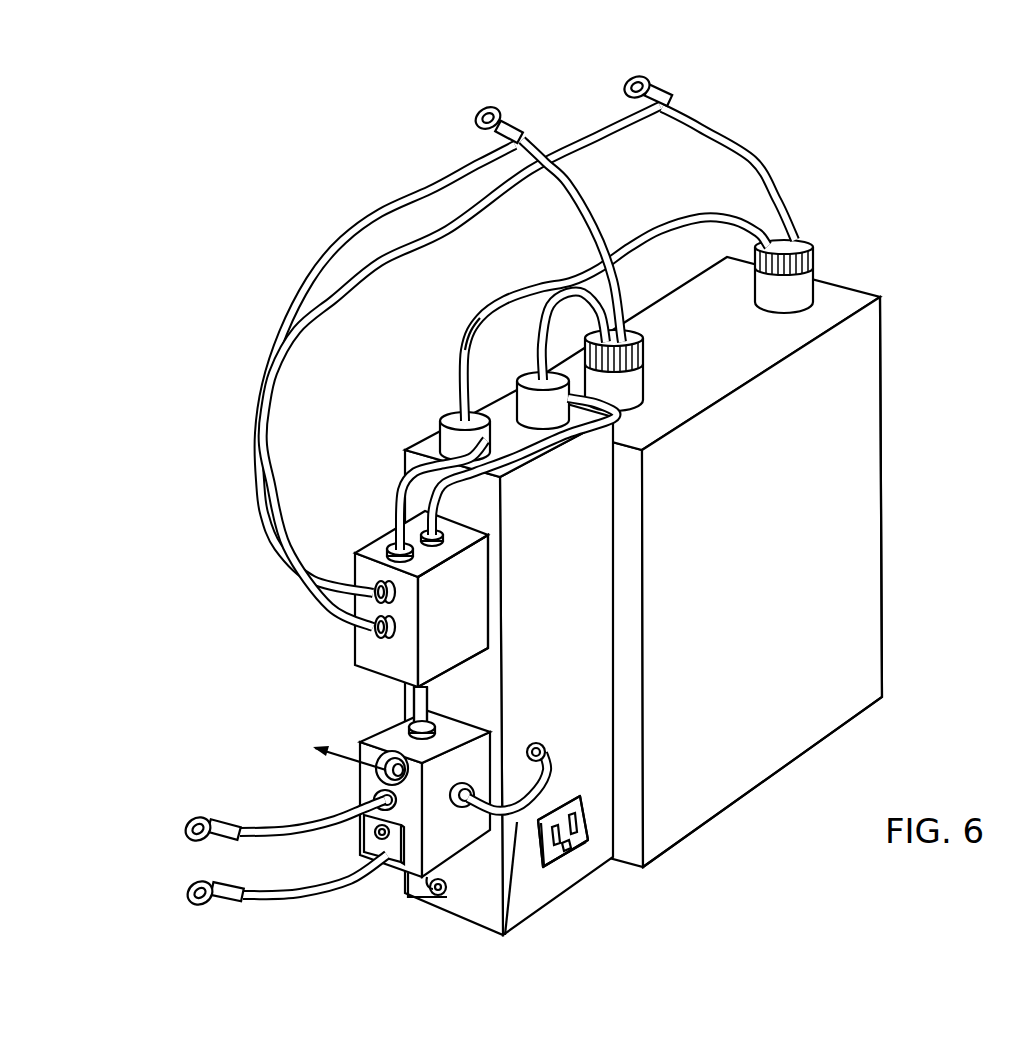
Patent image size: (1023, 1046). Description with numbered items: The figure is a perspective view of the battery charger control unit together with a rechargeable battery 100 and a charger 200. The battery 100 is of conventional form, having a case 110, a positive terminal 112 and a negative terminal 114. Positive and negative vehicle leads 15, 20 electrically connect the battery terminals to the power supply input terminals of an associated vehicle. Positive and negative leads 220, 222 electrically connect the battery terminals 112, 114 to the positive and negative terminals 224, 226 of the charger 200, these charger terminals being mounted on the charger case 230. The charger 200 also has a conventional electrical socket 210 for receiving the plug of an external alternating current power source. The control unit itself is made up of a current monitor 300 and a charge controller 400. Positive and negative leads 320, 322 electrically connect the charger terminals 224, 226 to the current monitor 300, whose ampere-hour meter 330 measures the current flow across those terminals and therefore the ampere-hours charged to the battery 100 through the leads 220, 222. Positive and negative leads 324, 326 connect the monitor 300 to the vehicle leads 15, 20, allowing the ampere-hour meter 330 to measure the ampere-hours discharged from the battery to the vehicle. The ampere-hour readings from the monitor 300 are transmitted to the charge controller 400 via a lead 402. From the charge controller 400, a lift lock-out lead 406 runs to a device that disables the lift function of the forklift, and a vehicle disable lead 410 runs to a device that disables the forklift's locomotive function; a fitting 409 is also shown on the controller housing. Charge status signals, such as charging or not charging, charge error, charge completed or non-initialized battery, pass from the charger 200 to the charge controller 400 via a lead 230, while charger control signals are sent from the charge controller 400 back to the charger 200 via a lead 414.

The positive lead 15 is at (650, 82).
The negative lead 20 is at (477, 116).
The rechargeable battery 100 is at (855, 662).
The case 110 is at (884, 561).
The positive terminal 112 is at (810, 287).
The negative terminal 114 is at (635, 383).
The charger 200 is at (584, 866).
The electrical socket 210 is at (550, 864).
The positive lead 220 is at (664, 228).
The negative lead 222 is at (505, 303).
The positive terminal 224 is at (596, 401).
The negative terminal 226 is at (430, 420).
The charger case 230 is at (415, 897).
The current monitor 300 is at (455, 628).
The positive lead 320 is at (433, 507).
The negative lead 322 is at (395, 503).
The positive lead 324 is at (583, 136).
The negative lead 326 is at (373, 217).
The ampere-hour meter 330 is at (468, 585).
The charge controller 400 is at (464, 760).
The lead 402 is at (425, 697).
The lift lock-out lead 406 is at (262, 832).
The terminal plate 409 is at (373, 835).
The vehicle disable lead 410 is at (293, 897).
The lead 414 is at (510, 925).